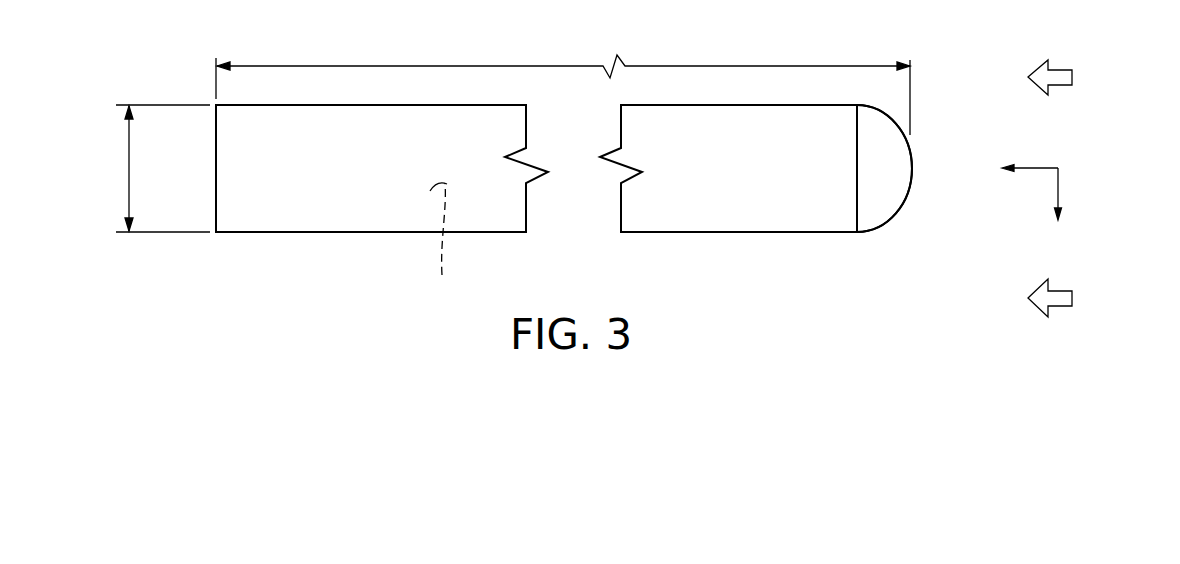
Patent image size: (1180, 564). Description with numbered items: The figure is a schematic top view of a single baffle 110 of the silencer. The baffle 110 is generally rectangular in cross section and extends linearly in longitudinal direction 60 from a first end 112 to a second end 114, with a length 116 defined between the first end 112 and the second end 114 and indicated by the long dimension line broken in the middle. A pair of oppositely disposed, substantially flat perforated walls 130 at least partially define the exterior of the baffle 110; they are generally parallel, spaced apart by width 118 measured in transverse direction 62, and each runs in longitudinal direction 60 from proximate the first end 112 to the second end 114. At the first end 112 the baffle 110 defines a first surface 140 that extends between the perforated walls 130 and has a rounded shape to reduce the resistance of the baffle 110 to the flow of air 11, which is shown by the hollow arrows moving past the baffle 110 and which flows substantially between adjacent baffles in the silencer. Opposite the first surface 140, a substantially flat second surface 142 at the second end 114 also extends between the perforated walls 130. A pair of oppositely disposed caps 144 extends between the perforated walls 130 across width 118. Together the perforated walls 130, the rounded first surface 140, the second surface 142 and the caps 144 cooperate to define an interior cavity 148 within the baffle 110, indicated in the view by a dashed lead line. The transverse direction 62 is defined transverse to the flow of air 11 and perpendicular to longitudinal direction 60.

The baffle 110 is at (561, 152).
The air 11 is at (1058, 70).
The length 116 is at (555, 66).
The perforated wall 130 is at (370, 104).
The width 118 is at (130, 155).
The second surface 142 is at (216, 187).
The second end 114 is at (214, 247).
The interior cavity 148 is at (448, 243).
The cap 144 is at (772, 178).
The first surface 140 is at (885, 226).
The first end 112 is at (916, 194).
The longitudinal direction 60 is at (1030, 168).
The transverse direction 62 is at (1061, 189).